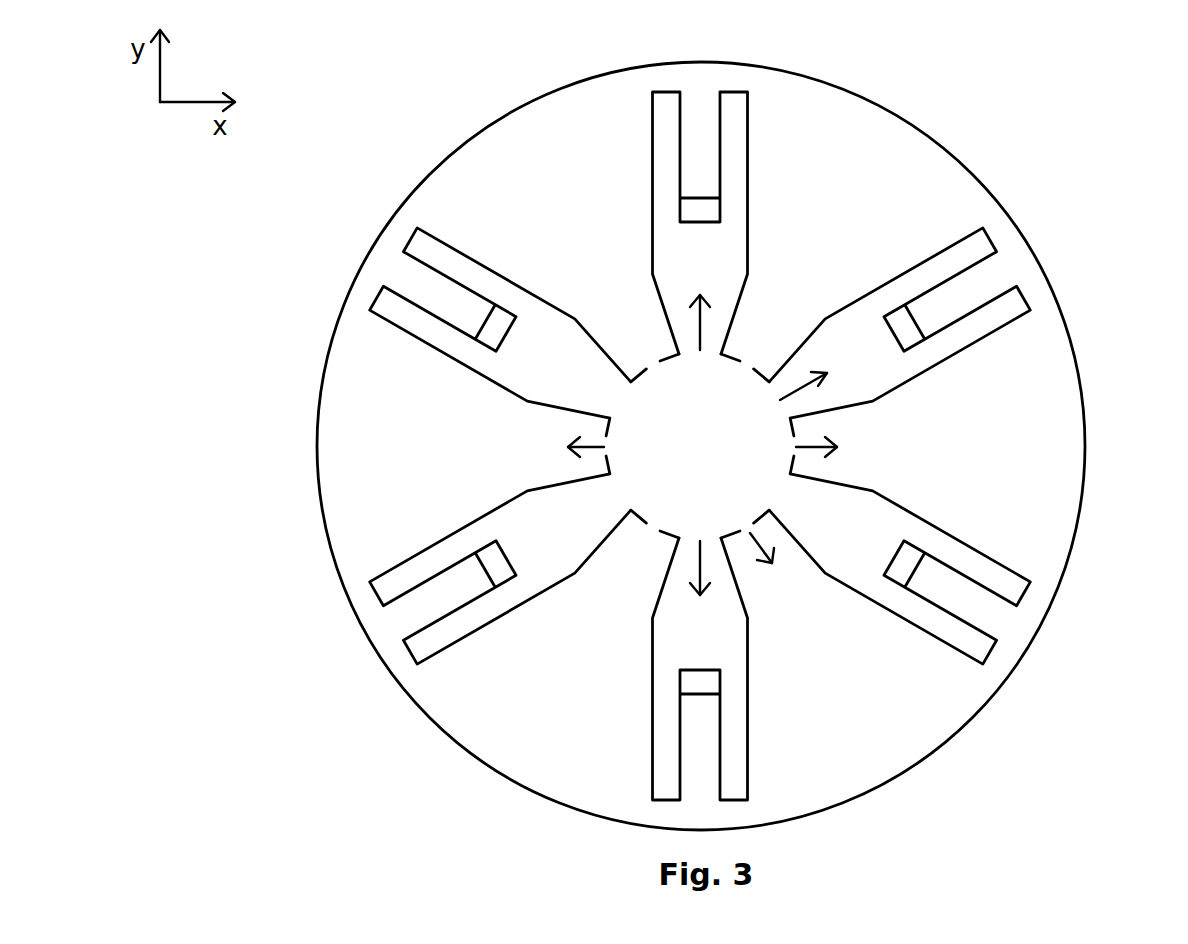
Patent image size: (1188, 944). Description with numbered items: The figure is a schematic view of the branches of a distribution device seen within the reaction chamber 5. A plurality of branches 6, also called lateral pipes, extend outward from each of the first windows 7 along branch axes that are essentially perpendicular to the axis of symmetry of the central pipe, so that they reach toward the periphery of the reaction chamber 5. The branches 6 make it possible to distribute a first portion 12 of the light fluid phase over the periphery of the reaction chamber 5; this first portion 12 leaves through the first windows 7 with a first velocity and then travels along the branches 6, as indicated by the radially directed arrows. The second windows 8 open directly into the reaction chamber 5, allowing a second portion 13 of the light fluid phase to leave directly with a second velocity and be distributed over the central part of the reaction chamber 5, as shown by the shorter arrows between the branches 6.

The reaction chamber 5 is at (634, 446).
The branches 6 is at (702, 421).
The first windows 7 is at (720, 455).
The second windows 8 is at (701, 450).
The first portion 12 is at (778, 444).
The second portion 13 is at (704, 517).